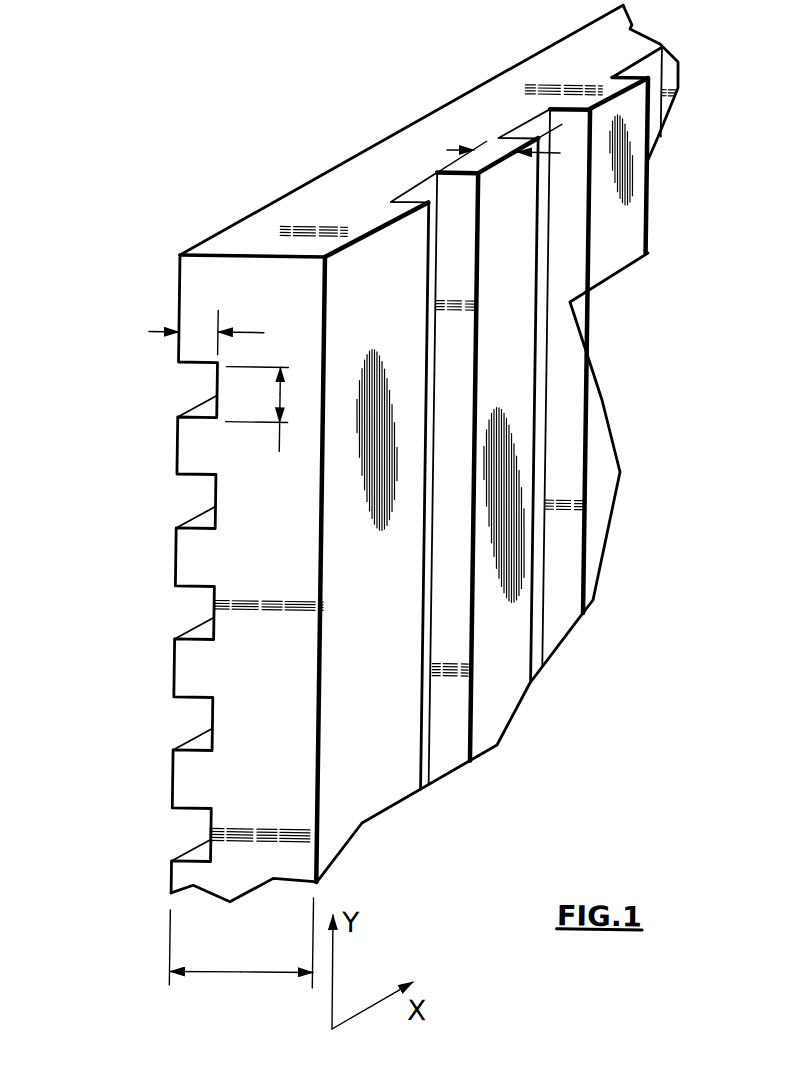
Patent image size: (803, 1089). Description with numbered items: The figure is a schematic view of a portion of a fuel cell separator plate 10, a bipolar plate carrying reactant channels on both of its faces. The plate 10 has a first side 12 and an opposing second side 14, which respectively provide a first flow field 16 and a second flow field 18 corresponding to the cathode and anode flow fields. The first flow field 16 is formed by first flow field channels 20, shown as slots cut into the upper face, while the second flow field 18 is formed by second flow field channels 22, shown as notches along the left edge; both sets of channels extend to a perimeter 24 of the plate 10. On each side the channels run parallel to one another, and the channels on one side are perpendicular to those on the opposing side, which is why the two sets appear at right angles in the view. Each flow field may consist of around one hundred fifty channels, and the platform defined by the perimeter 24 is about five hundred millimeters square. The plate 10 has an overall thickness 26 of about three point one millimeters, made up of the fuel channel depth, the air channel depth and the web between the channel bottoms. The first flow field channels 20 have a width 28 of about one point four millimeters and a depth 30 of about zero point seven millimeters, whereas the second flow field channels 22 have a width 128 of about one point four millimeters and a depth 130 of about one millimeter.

The fuel cell separator plate 10 is at (369, 525).
The first side 12 is at (374, 454).
The second side 14 is at (189, 578).
The first flow field 16 is at (595, 641).
The second flow field 18 is at (154, 720).
The first flow field channels 20 is at (617, 56).
The second flow field channels 22 is at (189, 715).
The perimeter 24 is at (278, 238).
The thickness 26 is at (245, 974).
The width 28 is at (424, 170).
The depth 30 is at (491, 149).
The width 128 is at (282, 441).
The depth 130 is at (200, 327).